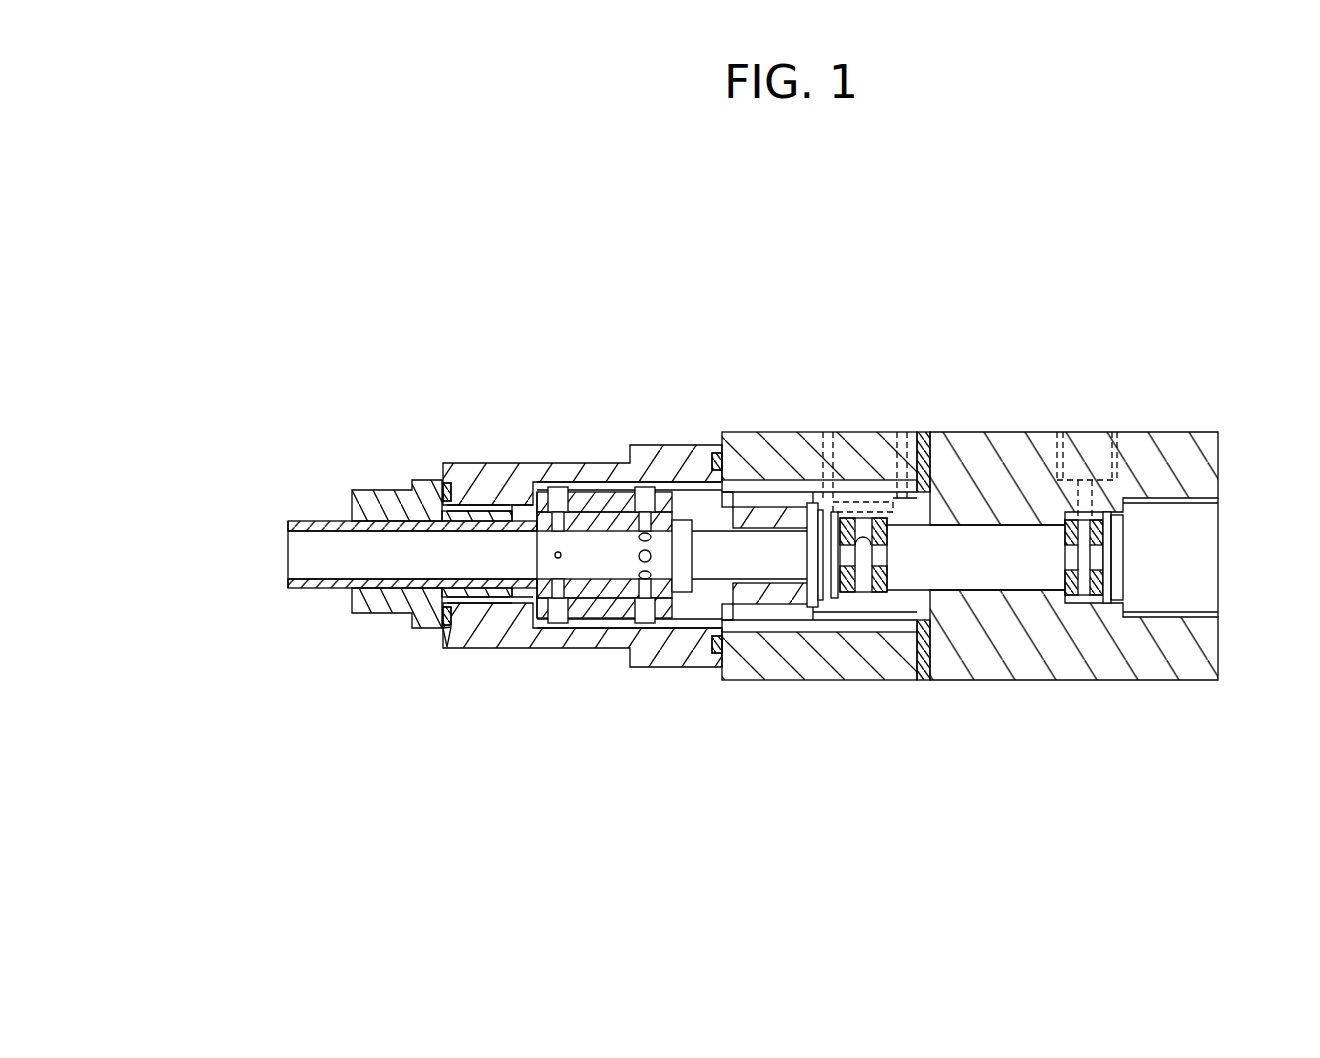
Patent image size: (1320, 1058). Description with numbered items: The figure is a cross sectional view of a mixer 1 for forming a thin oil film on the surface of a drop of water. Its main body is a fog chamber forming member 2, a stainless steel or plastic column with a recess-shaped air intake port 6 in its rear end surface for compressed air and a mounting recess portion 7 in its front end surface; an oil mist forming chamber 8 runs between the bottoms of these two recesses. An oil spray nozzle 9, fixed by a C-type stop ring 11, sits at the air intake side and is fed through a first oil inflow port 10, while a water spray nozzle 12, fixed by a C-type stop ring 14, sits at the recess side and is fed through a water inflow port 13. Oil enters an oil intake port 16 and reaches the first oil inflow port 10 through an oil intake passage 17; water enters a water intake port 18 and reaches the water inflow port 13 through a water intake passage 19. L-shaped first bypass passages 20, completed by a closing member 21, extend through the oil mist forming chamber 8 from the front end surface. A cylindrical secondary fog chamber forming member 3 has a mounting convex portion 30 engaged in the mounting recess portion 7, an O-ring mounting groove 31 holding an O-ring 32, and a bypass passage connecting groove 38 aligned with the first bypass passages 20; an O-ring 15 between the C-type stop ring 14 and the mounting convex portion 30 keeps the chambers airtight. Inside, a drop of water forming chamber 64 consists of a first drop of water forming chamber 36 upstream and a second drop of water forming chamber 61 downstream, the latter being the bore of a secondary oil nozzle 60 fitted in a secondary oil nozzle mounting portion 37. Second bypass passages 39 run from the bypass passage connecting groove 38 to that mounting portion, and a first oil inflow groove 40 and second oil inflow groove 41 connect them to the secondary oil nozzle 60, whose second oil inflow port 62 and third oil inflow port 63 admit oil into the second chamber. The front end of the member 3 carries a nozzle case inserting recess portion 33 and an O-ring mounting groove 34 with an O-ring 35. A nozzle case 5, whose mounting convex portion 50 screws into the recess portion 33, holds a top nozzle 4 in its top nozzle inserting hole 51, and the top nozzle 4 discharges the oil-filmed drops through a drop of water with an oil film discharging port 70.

The mixer for forming a thin oil film on the surface of a drop of water 1 is at (1000, 366).
The fog chamber forming member 2 is at (980, 447).
The secondary fog chamber forming member 3 is at (528, 486).
The top nozzle 4 is at (330, 522).
The nozzle case 5 is at (385, 491).
The air intake port 6 is at (1183, 537).
The mounting recess portion 7 is at (805, 468).
The oil mist forming chamber 8 is at (1000, 578).
The oil spray nozzle 9 is at (1072, 597).
The first oil inflow port 10 is at (1103, 568).
The C-type stop ring 11 is at (1118, 604).
The water spray nozzle 12 is at (878, 594).
The water inflow port 13 is at (862, 548).
The C-type stop ring 14 is at (834, 599).
The O-ring 15 is at (813, 608).
The oil intake port 16 is at (1082, 432).
The oil intake passage 17 is at (1147, 432).
The water intake port 18 is at (855, 432).
The water intake passage 19 is at (955, 432).
The first bypass passage 20 is at (816, 500).
The closing member 21 is at (925, 490).
The mounting convex portion 30 is at (768, 508).
The O-ring mounting groove 31 is at (716, 456).
The O-ring 32 is at (700, 483).
The nozzle case inserting recess portion 33 is at (490, 606).
The O-ring mounting groove 34 is at (449, 618).
The O-ring 35 is at (445, 633).
The first drop of water forming chamber 36 is at (690, 580).
The secondary oil nozzle mounting portion 37 is at (628, 492).
The bypass passage connecting groove 38 is at (714, 654).
The second bypass passage 39 is at (644, 487).
The first oil inflow groove 40 is at (640, 580).
The second oil inflow groove 41 is at (558, 558).
The mounting convex portion 50 is at (490, 478).
The top nozzle inserting hole 51 is at (378, 600).
The secondary oil nozzle 60 is at (595, 486).
The second drop of water forming chamber 61 is at (565, 603).
The second oil inflow port 62 is at (593, 558).
The third oil inflow port 63 is at (545, 602).
The drop of water forming chamber 64 is at (586, 880).
The drop of water with an oil film discharging port 70 is at (318, 560).